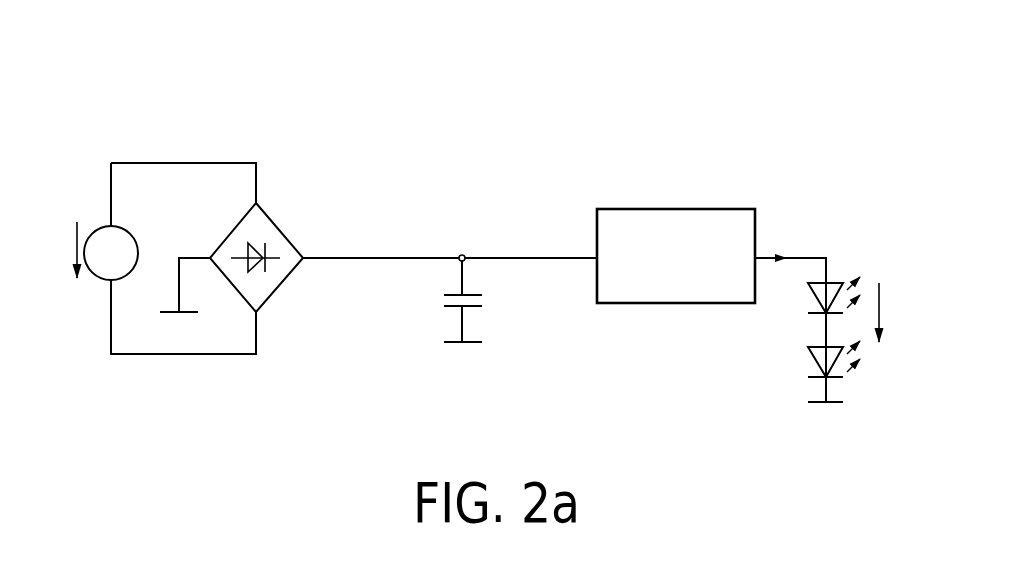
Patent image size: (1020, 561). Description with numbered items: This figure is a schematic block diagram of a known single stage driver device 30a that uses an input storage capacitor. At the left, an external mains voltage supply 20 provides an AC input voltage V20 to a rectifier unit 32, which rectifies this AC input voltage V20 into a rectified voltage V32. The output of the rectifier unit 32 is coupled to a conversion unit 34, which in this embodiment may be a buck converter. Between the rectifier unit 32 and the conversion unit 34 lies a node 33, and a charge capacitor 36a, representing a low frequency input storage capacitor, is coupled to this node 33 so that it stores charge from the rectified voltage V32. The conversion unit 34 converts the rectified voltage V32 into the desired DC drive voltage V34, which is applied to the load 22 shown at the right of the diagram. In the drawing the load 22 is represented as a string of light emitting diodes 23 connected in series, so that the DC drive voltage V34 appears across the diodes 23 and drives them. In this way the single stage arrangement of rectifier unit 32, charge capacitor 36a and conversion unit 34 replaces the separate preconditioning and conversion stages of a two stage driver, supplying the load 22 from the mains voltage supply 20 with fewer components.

The external mains voltage supply 20 is at (99, 282).
The AC input voltage V20 is at (73, 262).
The rectifier unit 32 is at (263, 214).
The rectified voltage V32 is at (310, 262).
The node 33 is at (466, 260).
The charge capacitor 36a is at (448, 310).
The conversion unit 34 is at (688, 209).
The light emitting diodes 23 is at (818, 302).
The load 22 is at (788, 362).
The DC drive voltage V34 is at (880, 312).
The single stage driver device 30a is at (556, 110).